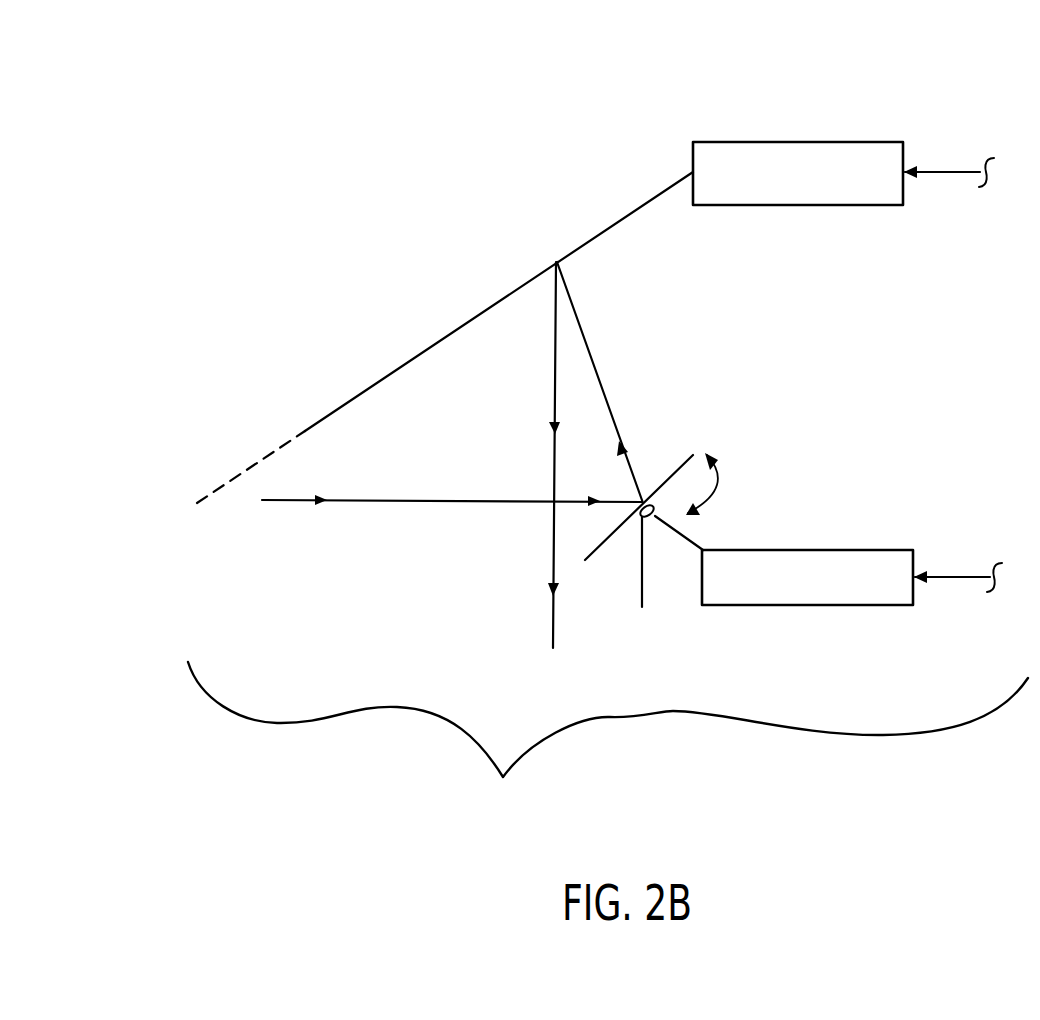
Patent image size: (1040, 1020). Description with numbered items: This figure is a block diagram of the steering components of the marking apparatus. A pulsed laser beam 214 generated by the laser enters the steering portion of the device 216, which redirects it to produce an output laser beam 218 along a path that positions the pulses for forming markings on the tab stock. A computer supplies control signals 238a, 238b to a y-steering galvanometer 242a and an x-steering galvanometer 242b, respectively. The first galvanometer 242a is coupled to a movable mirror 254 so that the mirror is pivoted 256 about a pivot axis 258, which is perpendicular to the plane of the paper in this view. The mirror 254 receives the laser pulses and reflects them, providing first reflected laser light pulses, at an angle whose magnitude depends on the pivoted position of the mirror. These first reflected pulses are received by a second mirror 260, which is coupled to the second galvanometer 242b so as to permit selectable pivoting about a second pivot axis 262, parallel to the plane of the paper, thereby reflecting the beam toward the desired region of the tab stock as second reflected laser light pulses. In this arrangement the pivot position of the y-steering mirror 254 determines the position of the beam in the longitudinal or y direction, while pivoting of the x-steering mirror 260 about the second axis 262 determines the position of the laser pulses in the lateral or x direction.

The pulsed laser beam 214 is at (285, 500).
The steering portion of the device 216 is at (503, 778).
The output laser beam 218 is at (548, 628).
The control signal 238a is at (943, 577).
The control signal 238b is at (947, 170).
The y-steering galvanometer 242a is at (817, 551).
The x-steering galvanometer 242b is at (760, 142).
The mirror 254 is at (673, 463).
The pivoting of the mirror 256 is at (717, 477).
The pivot axis 258 is at (642, 607).
The second mirror 260 is at (570, 254).
The second pivot axis 262 is at (310, 422).